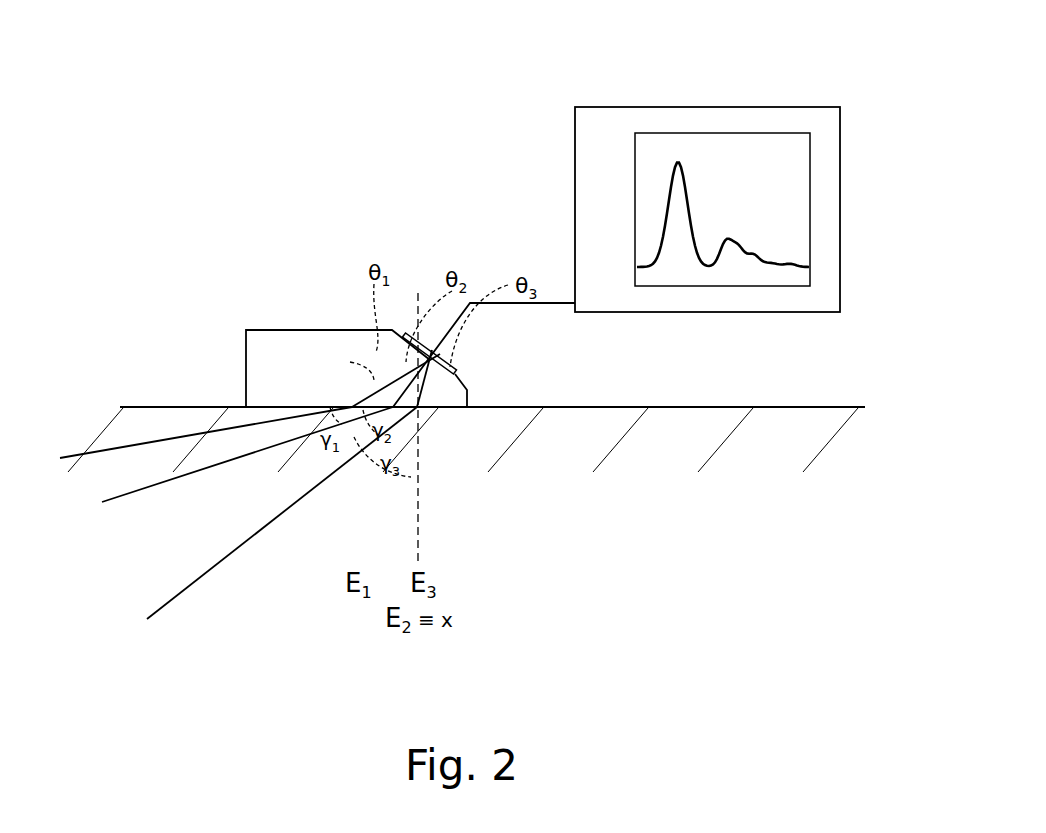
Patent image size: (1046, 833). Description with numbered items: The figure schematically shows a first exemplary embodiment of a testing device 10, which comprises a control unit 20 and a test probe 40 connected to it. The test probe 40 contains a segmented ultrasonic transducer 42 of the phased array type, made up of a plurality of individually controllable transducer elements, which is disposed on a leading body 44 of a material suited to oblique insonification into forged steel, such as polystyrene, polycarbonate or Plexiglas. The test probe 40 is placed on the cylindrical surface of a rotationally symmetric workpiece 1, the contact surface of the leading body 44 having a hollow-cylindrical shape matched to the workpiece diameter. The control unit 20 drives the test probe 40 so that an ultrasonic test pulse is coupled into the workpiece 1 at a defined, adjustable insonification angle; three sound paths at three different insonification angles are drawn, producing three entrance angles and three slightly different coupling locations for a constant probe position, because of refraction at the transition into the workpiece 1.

The workpiece 1 is at (809, 421).
The testing device 10 is at (555, 585).
The control unit 20 is at (598, 122).
The test probe 40 is at (395, 262).
The segmented ultrasonic transducer 42 is at (458, 368).
The leading body 44 is at (263, 340).